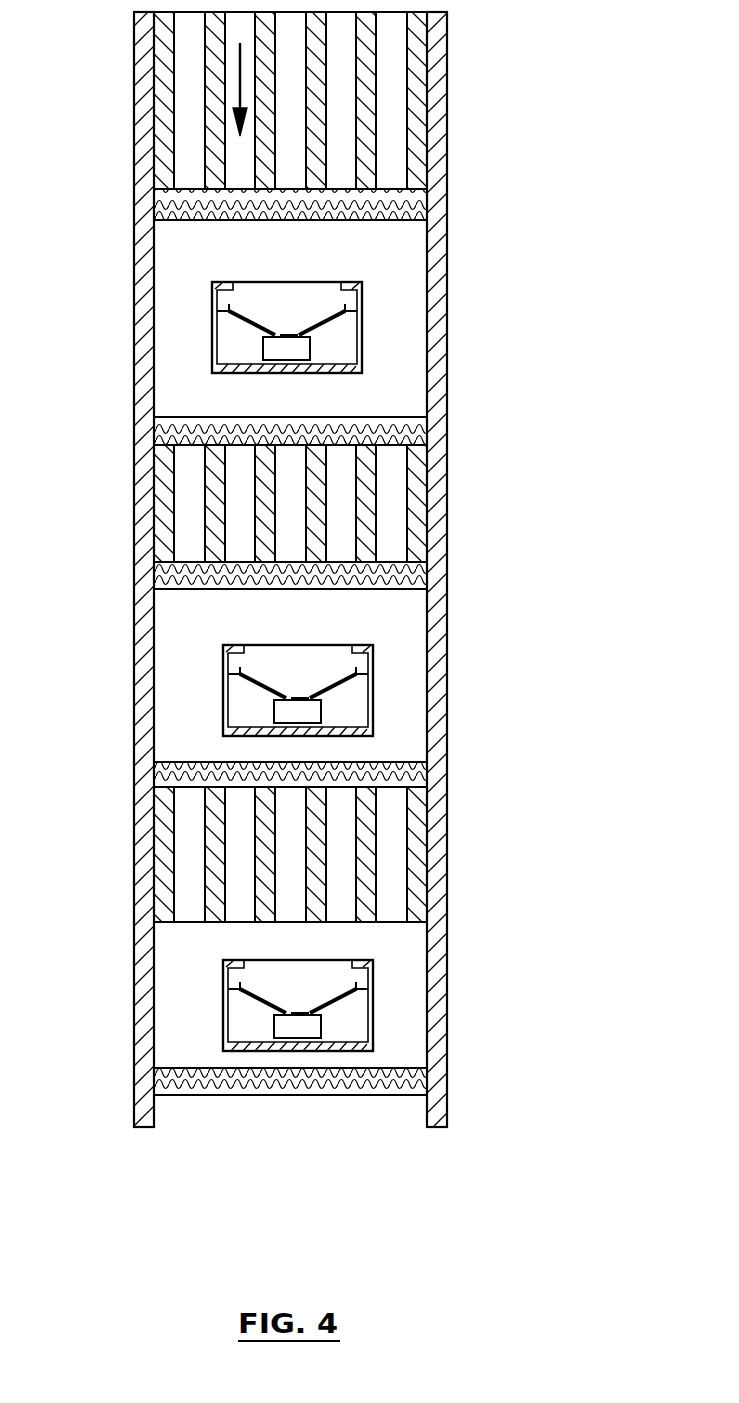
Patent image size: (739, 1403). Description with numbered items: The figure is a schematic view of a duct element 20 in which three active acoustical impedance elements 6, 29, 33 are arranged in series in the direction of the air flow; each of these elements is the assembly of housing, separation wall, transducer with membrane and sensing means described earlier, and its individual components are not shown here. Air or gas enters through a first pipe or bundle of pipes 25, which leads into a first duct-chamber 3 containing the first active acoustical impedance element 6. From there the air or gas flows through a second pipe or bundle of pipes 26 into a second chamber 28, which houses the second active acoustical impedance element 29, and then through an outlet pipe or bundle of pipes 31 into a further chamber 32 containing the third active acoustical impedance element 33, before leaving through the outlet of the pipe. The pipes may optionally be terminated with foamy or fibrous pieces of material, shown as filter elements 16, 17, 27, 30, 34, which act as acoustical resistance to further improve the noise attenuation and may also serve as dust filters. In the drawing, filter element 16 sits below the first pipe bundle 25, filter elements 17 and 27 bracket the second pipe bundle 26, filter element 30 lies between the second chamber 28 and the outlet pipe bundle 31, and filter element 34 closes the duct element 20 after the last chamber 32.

The duct element 20 is at (134, 168).
The first pipe or bundle of pipes 25 is at (392, 132).
The filter element 16 is at (422, 207).
The first duct-chamber 3 is at (327, 318).
The active acoustical impedance element 6 is at (343, 330).
The filter element 17 is at (418, 430).
The second pipe or bundle of pipes 26 is at (343, 513).
The filter element 27 is at (405, 575).
The second chamber 28 is at (343, 675).
The active acoustical impedance element 29 is at (350, 692).
The filter element 30 is at (418, 775).
The outlet pipe or bundle of pipes 31 is at (345, 872).
The chamber 32 is at (341, 1000).
The active acoustical impedance element 33 is at (350, 1003).
The filter element 34 is at (323, 1083).